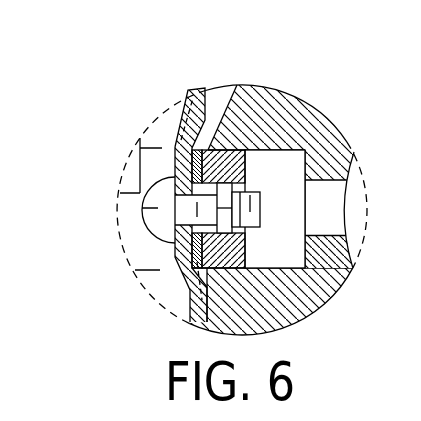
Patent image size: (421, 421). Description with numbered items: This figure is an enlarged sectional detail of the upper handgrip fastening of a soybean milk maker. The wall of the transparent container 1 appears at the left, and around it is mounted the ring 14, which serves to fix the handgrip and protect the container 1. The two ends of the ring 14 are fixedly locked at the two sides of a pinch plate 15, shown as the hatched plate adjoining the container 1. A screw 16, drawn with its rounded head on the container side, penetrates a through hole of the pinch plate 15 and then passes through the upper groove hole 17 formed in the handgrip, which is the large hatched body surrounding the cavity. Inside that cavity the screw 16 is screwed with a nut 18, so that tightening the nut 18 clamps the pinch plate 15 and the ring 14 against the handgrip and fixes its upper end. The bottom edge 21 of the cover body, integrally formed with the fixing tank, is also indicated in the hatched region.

The container 1 is at (192, 123).
The ring 14 is at (178, 263).
The pinch plate 15 is at (226, 165).
The screw 16 is at (157, 224).
The upper groove hole 17 is at (277, 172).
The nut 18 is at (243, 232).
The bottom edge 21 is at (273, 105).